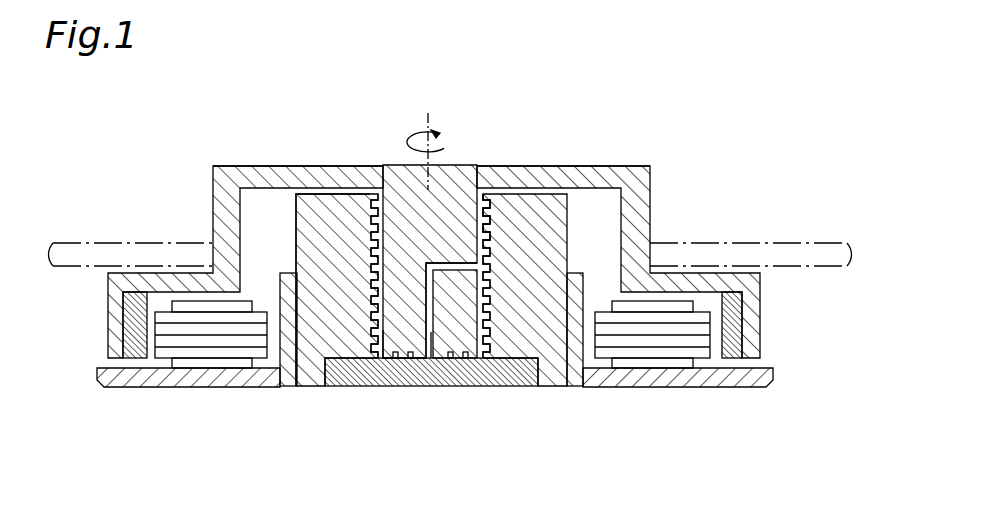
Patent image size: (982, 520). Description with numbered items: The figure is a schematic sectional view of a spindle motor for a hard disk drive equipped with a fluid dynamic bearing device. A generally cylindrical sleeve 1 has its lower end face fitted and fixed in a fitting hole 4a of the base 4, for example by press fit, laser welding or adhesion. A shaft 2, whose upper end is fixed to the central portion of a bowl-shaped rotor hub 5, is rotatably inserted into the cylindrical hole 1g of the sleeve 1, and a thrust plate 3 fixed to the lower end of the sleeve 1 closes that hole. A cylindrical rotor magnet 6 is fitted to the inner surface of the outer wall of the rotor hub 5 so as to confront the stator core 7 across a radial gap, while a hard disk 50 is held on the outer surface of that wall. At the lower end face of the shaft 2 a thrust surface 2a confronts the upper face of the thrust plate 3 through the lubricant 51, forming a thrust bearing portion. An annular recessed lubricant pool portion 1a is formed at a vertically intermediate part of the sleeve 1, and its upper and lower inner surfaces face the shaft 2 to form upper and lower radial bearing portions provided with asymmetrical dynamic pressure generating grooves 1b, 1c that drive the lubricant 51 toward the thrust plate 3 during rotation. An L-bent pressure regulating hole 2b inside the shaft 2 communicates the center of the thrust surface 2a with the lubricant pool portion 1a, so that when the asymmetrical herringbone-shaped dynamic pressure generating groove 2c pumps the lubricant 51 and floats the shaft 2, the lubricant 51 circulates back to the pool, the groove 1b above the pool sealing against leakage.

The sleeve 1 is at (570, 225).
The lubricant pool portion 1a is at (370, 270).
The dynamic pressure generating groove 1b is at (347, 200).
The dynamic pressure generating groove 1c is at (300, 378).
The cylindrical hole 1g is at (480, 192).
The shaft 2 is at (460, 187).
The thrust surface 2a is at (403, 370).
The pressure regulating hole 2b is at (447, 372).
The dynamic pressure generating groove 2c is at (490, 378).
The thrust plate 3 is at (370, 378).
The base 4 is at (240, 378).
The fitting hole 4a is at (575, 365).
The rotor hub 5 is at (617, 173).
The rotor magnet 6 is at (132, 360).
The stator core 7 is at (195, 352).
The hard disk 50 is at (798, 243).
The lubricant 51 is at (370, 264).